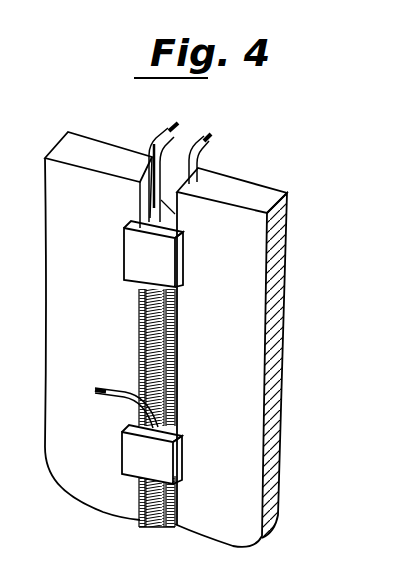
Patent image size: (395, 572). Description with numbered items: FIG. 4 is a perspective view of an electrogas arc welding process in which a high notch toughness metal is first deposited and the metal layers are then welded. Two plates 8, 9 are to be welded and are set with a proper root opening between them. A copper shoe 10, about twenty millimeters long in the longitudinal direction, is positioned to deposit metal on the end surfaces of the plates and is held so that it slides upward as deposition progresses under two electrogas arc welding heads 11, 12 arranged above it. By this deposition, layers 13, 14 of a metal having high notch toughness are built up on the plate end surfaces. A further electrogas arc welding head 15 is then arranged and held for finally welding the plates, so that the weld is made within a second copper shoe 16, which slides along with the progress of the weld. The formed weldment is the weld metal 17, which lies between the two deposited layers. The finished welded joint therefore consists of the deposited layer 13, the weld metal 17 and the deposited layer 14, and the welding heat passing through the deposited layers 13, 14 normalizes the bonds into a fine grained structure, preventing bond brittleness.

The plate to be welded 8 is at (56, 214).
The plate to be welded 9 is at (255, 253).
The copper shoe 10 is at (134, 258).
The electrogas arc welding head 11 is at (153, 142).
The electrogas arc welding head 12 is at (199, 158).
The deposited layer 13 is at (140, 325).
The deposited layer 14 is at (177, 333).
The electrogas arc welding head 15 is at (120, 407).
The copper shoe 16 is at (160, 460).
The weld metal 17 is at (150, 522).